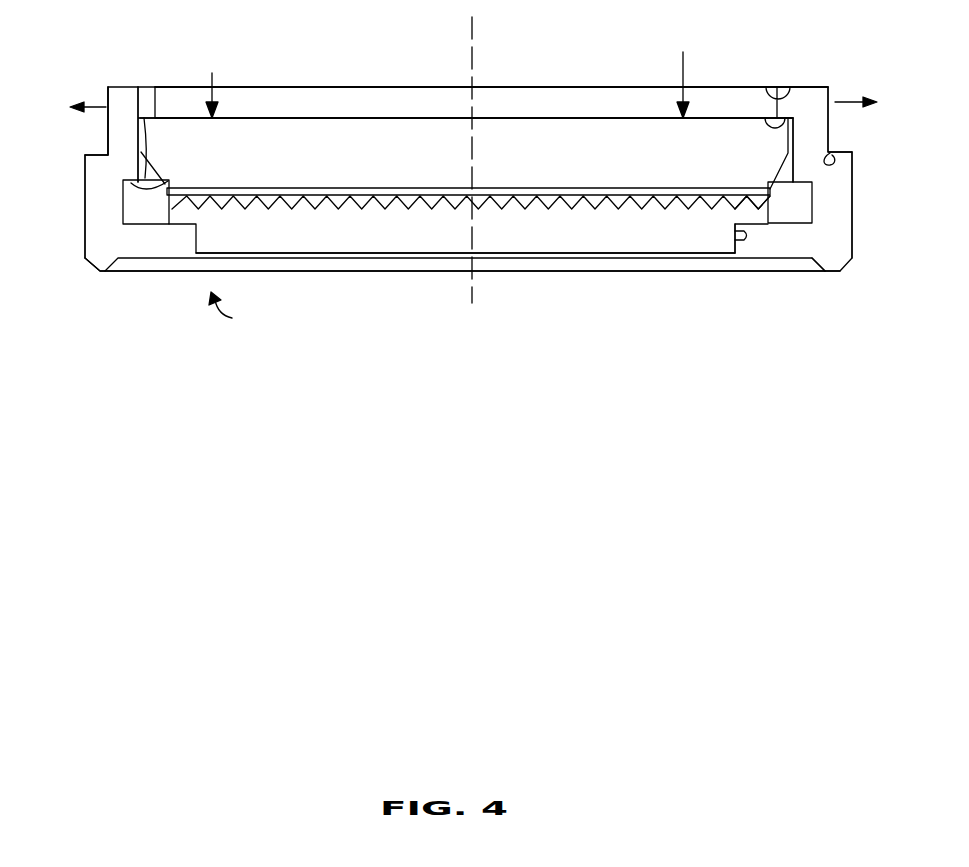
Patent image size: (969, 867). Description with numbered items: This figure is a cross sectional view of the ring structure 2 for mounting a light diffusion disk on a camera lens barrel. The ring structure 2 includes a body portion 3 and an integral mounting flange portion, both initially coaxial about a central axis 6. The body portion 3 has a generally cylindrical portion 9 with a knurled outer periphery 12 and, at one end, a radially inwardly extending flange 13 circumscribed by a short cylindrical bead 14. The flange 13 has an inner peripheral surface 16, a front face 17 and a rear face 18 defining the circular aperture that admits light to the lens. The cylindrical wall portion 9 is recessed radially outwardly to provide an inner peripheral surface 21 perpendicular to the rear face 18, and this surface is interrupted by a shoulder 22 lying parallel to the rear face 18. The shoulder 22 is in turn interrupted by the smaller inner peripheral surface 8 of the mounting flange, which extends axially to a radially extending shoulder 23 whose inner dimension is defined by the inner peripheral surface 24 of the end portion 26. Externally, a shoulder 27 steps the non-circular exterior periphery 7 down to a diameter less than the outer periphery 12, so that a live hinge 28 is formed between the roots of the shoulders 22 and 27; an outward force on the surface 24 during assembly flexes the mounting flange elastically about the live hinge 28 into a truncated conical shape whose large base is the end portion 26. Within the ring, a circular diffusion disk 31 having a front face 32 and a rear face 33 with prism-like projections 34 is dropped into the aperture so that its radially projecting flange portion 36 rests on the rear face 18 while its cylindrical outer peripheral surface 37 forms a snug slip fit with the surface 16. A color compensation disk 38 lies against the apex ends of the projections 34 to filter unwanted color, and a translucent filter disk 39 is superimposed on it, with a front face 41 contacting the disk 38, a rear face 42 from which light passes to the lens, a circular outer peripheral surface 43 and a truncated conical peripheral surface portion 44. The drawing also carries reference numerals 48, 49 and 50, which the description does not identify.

The ring structure 2 is at (231, 314).
The body portion 3 is at (85, 246).
The central axis 6 is at (472, 38).
The non-circular exterior periphery 7 is at (830, 110).
The inner peripheral surface 8 is at (147, 140).
The cylindrical portion 9 is at (100, 225).
The outer periphery 12 is at (85, 178).
The radially inwardly extending flange 13 is at (770, 248).
The cylindrical bead 14 is at (100, 272).
The inner peripheral surface 16 is at (730, 250).
The front face 17 is at (793, 262).
The rear face 18 is at (163, 223).
The inner peripheral surface 21 is at (812, 215).
The shoulder 22 is at (143, 183).
The radially extending surface 23 is at (775, 120).
The inner peripheral surface 24 is at (777, 90).
The end portion 26 is at (793, 108).
The shoulder 27 is at (107, 150).
The live hinge 28 is at (830, 152).
The diffusion disk 31 is at (612, 240).
The front face 32 is at (662, 255).
The rear face 33 is at (567, 210).
The prism-like projections 34 is at (493, 213).
The flange portion 36 is at (733, 215).
The outer peripheral surface 37 is at (735, 232).
The color compensation disk 38 is at (357, 188).
The translucent filter disk 39 is at (313, 143).
The front face 41 is at (412, 208).
The rear face 42 is at (264, 117).
The outer peripheral surface 43 is at (142, 117).
The peripheral surface portion 44 is at (142, 170).
The right frame corner 48 is at (820, 87).
The insertion direction 49 is at (447, 74).
The lateral direction 50 is at (472, 91).